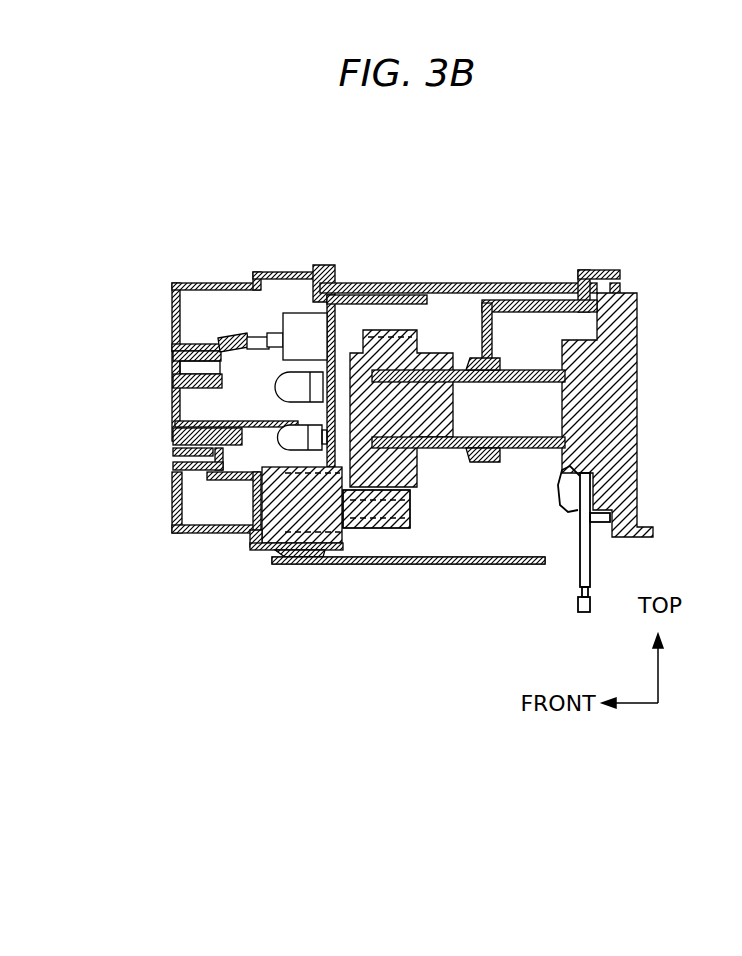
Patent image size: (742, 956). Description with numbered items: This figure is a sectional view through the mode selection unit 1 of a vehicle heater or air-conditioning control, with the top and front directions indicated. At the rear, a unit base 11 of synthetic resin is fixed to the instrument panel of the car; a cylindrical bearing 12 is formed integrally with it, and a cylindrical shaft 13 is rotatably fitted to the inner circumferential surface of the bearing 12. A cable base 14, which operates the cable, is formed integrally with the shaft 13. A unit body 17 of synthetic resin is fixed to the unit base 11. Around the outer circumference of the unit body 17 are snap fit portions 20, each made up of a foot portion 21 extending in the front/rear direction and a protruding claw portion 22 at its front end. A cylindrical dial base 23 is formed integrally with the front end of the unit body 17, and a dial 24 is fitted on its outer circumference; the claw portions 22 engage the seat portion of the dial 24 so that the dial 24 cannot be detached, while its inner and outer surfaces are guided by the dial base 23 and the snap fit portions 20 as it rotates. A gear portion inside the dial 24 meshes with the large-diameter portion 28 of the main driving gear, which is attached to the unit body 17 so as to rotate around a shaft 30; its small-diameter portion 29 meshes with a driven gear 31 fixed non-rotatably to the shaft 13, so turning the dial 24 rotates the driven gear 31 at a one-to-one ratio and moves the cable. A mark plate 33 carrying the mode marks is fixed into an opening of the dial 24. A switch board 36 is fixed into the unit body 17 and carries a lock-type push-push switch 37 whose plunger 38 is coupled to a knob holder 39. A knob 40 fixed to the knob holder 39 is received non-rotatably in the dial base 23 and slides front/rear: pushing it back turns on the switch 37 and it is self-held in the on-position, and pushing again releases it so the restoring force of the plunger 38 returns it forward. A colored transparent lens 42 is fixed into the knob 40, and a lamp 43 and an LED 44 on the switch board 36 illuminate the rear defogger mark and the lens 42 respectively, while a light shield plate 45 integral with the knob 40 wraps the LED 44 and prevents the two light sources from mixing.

The mode selection unit 1 is at (463, 578).
The unit base 11 is at (540, 283).
The bearing 12 is at (468, 463).
The shaft 13 is at (530, 449).
The cable base 14 is at (637, 363).
The unit body 17 is at (478, 283).
The snap fit portion 20 is at (366, 628).
The foot portion 21 is at (328, 564).
The claw portion 22 is at (290, 557).
The dial base 23 is at (205, 533).
The dial 24 is at (170, 533).
The large-diameter portion 28 is at (273, 550).
The small-diameter portion 29 is at (380, 565).
The shaft 30 is at (240, 533).
The driven gear 31 is at (398, 330).
The mark plate 33 is at (172, 282).
The switch board 36 is at (357, 283).
The switch 37 is at (295, 278).
The plunger 38 is at (263, 332).
The knob holder 39 is at (227, 333).
The knob 40 is at (173, 355).
The lens 42 is at (173, 433).
The lamp 43 is at (276, 395).
The LED 44 is at (275, 421).
The light shield plate 45 is at (173, 385).